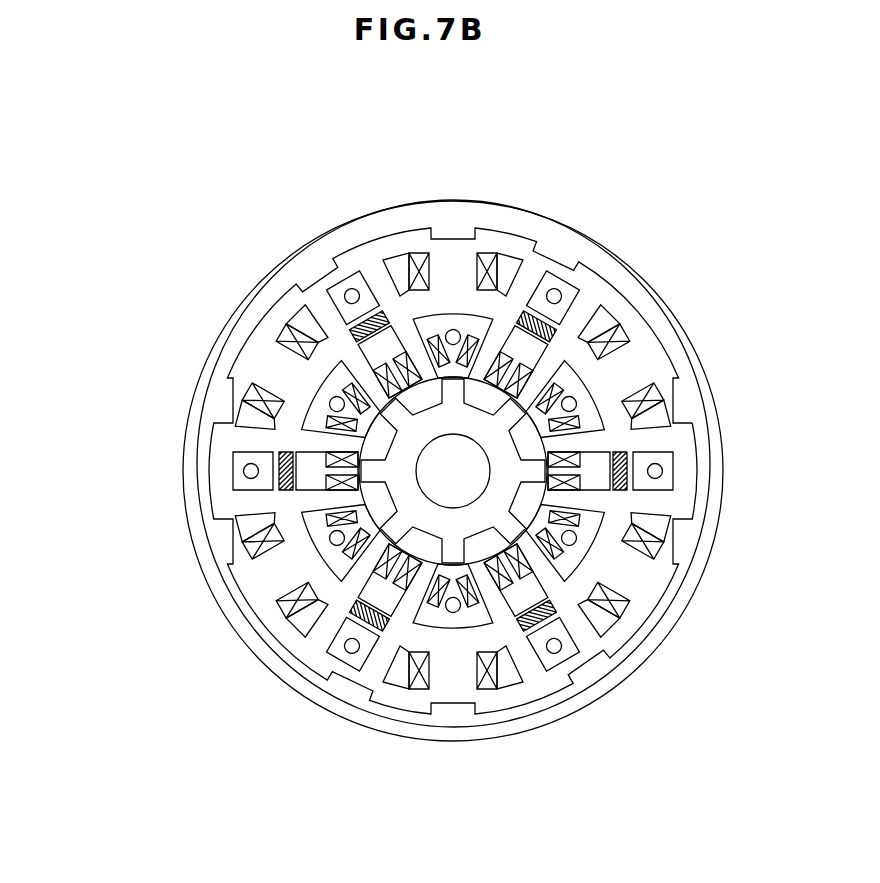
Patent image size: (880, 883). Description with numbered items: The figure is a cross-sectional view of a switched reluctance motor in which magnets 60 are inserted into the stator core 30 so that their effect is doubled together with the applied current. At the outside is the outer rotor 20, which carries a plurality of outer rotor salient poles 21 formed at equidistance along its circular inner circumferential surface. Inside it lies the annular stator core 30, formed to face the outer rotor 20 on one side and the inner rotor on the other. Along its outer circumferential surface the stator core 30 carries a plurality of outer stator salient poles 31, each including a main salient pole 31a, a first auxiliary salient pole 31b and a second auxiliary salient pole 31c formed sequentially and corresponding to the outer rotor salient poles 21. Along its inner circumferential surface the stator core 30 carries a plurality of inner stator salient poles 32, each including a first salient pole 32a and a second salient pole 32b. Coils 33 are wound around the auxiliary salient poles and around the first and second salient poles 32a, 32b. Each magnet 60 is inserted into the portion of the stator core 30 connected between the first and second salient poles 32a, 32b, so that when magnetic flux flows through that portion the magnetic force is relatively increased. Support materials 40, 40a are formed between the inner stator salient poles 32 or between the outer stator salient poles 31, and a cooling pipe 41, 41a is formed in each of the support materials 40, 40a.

The outer rotor 20 is at (606, 243).
The outer rotor salient poles 21 is at (560, 278).
The stator core 30 is at (617, 418).
The outer stator salient poles 31 is at (305, 147).
The main salient pole 31a is at (450, 252).
The first auxiliary salient pole 31b is at (375, 268).
The second auxiliary salient pole 31c is at (310, 290).
The inner stator salient poles 32 is at (100, 432).
The first salient pole 32a is at (322, 450).
The second salient pole 32b is at (322, 497).
The coils 33 is at (622, 607).
The support material 40 is at (433, 628).
The support material 40a is at (318, 437).
The cooling pipe 41 is at (453, 603).
The cooling pipe 41a is at (317, 357).
The magnet 60 is at (636, 473).